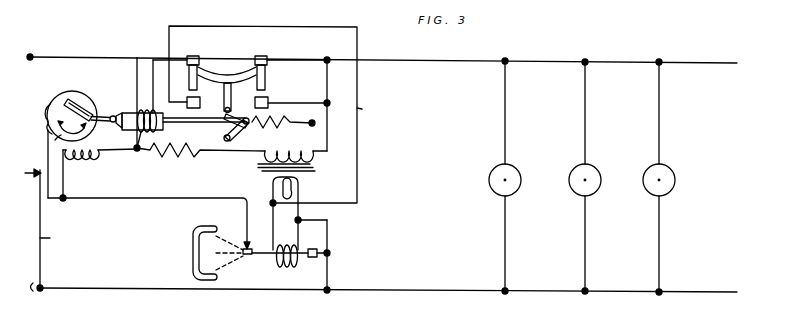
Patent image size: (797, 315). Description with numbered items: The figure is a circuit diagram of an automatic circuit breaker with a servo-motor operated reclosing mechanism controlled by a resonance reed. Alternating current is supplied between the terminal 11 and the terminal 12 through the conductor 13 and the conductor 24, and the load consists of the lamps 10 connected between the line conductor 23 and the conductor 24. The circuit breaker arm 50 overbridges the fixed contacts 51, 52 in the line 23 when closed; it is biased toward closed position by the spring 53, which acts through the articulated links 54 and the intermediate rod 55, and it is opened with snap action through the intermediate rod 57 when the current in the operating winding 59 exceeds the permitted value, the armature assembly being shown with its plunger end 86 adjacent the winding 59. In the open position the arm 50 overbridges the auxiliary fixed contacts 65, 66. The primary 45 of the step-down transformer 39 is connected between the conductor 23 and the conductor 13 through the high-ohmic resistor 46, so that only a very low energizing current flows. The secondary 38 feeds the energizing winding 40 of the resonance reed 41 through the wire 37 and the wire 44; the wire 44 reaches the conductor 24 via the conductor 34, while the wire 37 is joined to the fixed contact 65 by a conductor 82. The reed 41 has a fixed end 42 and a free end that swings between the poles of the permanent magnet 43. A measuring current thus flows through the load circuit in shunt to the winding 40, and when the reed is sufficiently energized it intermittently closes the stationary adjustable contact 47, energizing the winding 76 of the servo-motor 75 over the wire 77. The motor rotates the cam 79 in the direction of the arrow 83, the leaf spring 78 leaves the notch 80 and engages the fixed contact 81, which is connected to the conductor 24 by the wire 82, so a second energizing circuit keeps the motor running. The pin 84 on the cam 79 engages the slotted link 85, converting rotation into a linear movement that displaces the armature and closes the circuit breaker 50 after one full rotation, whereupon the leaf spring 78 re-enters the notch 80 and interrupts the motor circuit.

The lamps 10 is at (512, 168).
The terminal 11 is at (33, 49).
The terminal 12 is at (35, 294).
The conductor 13 is at (83, 95).
The conductor 23 is at (473, 61).
The conductor 24 is at (426, 292).
The conductor 34 is at (327, 283).
The wire 37 is at (274, 211).
The secondary 38 is at (273, 185).
The transformer 39 is at (316, 170).
The energizing winding 40 is at (293, 260).
The resonance reed 41 is at (261, 283).
The fixed end 42 is at (312, 258).
The permanent magnet 43 is at (193, 250).
The wire 44 is at (292, 246).
The primary 45 is at (300, 147).
The resistor 46 is at (183, 155).
The stationary and adjustable contact 47 is at (246, 218).
The circuit breaker arm 50 is at (231, 72).
The fixed contact 51 is at (197, 52).
The fixed contact 52 is at (262, 56).
The spring 53 is at (270, 128).
The articulated links 54 is at (224, 138).
The intermediate rod 55 is at (231, 93).
The intermediate rod 57 is at (181, 119).
The operating winding 59 is at (150, 112).
The fixed contact 65 is at (187, 101).
The fixed contact 66 is at (268, 102).
The servo-motor 75 is at (80, 85).
The energizing winding 76 is at (94, 158).
The wire 77 is at (177, 197).
The leaf spring 78 is at (47, 153).
The cam 79 is at (85, 131).
The notch 80 is at (50, 109).
The fixed contact 81 is at (26, 228).
The wire 82 is at (208, 173).
The arrow 83 is at (54, 143).
The pin 84 is at (97, 113).
The slotted link 85 is at (86, 105).
The plunger 86 is at (128, 113).